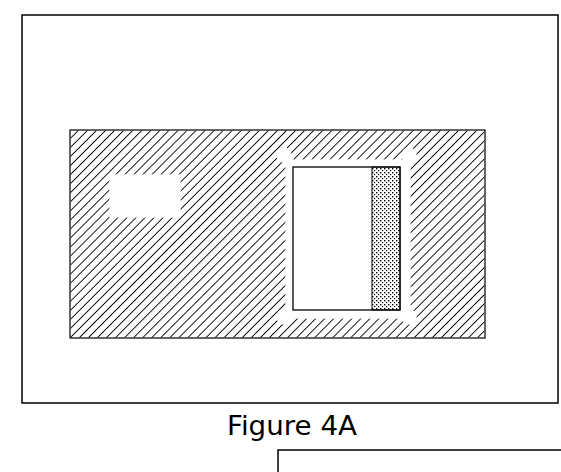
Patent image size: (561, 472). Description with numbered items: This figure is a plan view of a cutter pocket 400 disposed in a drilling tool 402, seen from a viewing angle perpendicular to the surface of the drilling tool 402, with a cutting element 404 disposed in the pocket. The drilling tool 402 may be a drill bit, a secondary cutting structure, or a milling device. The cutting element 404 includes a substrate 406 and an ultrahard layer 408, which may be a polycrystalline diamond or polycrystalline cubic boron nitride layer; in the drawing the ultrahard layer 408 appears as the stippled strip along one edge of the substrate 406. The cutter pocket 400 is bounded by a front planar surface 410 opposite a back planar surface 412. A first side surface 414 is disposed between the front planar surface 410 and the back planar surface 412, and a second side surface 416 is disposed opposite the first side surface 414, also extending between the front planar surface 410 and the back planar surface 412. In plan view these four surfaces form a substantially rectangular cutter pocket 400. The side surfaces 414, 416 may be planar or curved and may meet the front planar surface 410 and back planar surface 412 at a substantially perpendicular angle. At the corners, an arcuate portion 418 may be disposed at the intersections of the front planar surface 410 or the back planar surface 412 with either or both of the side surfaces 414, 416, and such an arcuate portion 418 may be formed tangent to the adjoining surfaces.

The cutter pocket 400 is at (156, 70).
The drilling tool 402 is at (165, 210).
The cutting element 404 is at (260, 146).
The substrate 406 is at (313, 246).
The ultrahard layer 408 is at (390, 202).
The front planar surface 410 is at (410, 240).
The back planar surface 412 is at (280, 283).
The first side surface 414 is at (350, 160).
The second side surface 416 is at (352, 318).
The arcuate portion 418 is at (410, 318).